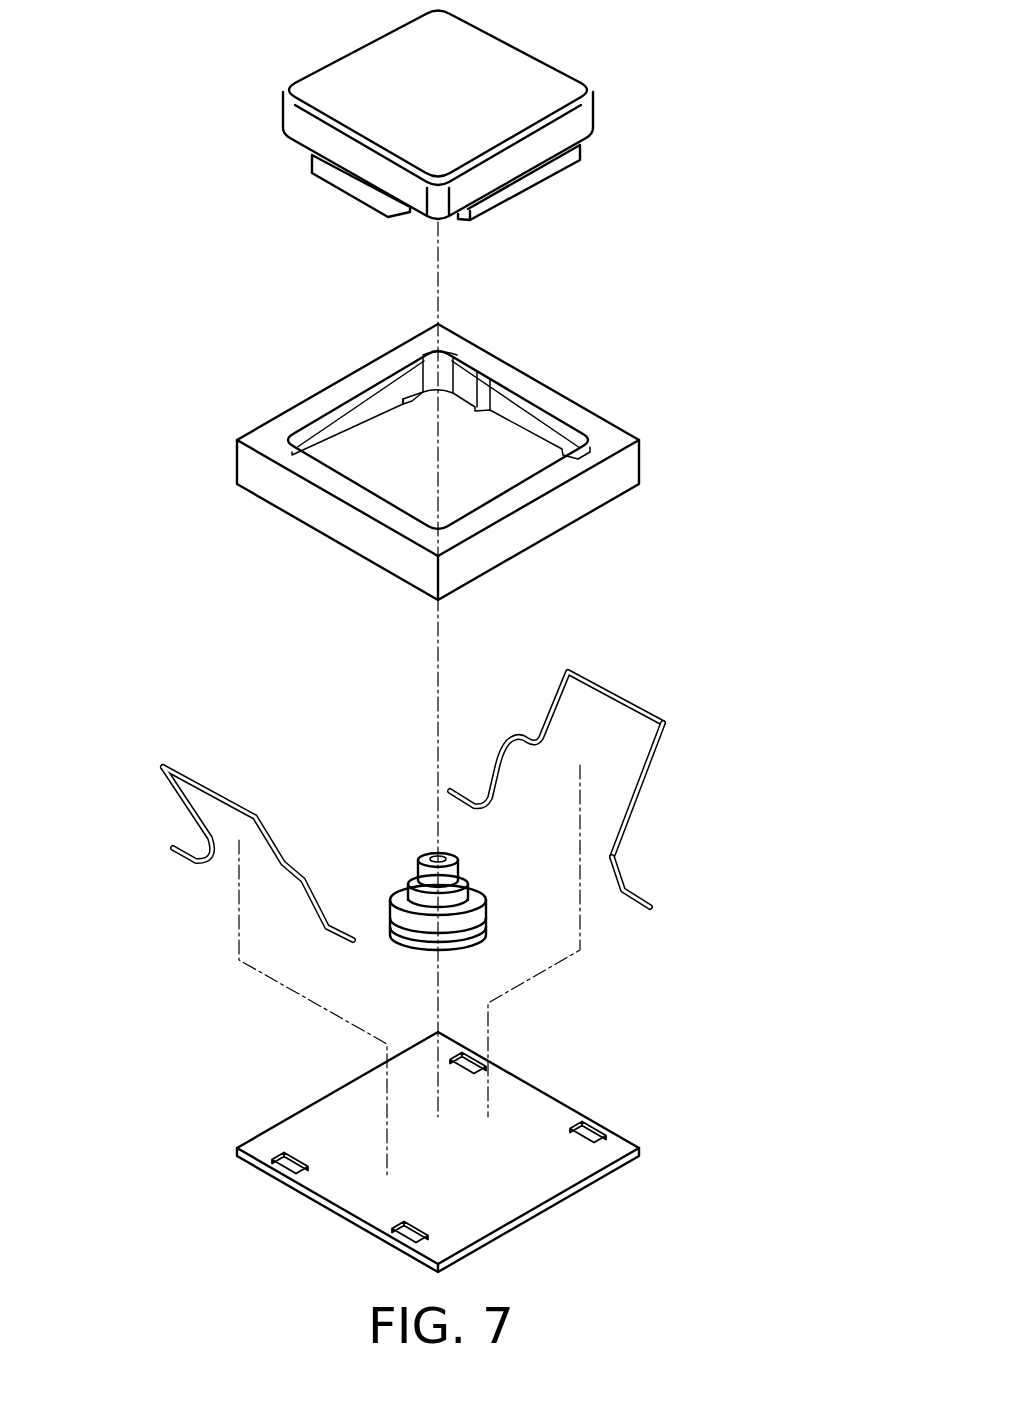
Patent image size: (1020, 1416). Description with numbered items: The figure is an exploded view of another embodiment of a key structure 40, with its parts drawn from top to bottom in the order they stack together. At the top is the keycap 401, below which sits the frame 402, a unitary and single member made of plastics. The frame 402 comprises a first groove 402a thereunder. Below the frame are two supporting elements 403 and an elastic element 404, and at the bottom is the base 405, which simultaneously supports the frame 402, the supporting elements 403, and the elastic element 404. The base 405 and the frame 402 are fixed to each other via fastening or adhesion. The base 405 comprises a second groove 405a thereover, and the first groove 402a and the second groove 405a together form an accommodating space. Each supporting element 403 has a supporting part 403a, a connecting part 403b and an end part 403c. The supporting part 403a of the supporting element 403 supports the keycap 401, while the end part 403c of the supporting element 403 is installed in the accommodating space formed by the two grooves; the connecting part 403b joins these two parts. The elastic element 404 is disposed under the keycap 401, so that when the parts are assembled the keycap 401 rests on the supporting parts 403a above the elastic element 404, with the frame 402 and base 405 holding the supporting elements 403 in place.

The key structure 40 is at (76, 42).
The keycap 401 is at (513, 62).
The frame 402 is at (500, 439).
The first groove 402a is at (415, 402).
The supporting element 403 is at (510, 805).
The supporting part 403a is at (625, 700).
The connecting part 403b is at (643, 780).
The end part 403c is at (698, 875).
The elastic element 404 is at (402, 890).
The base 405 is at (469, 1143).
The second groove 405a is at (584, 1132).